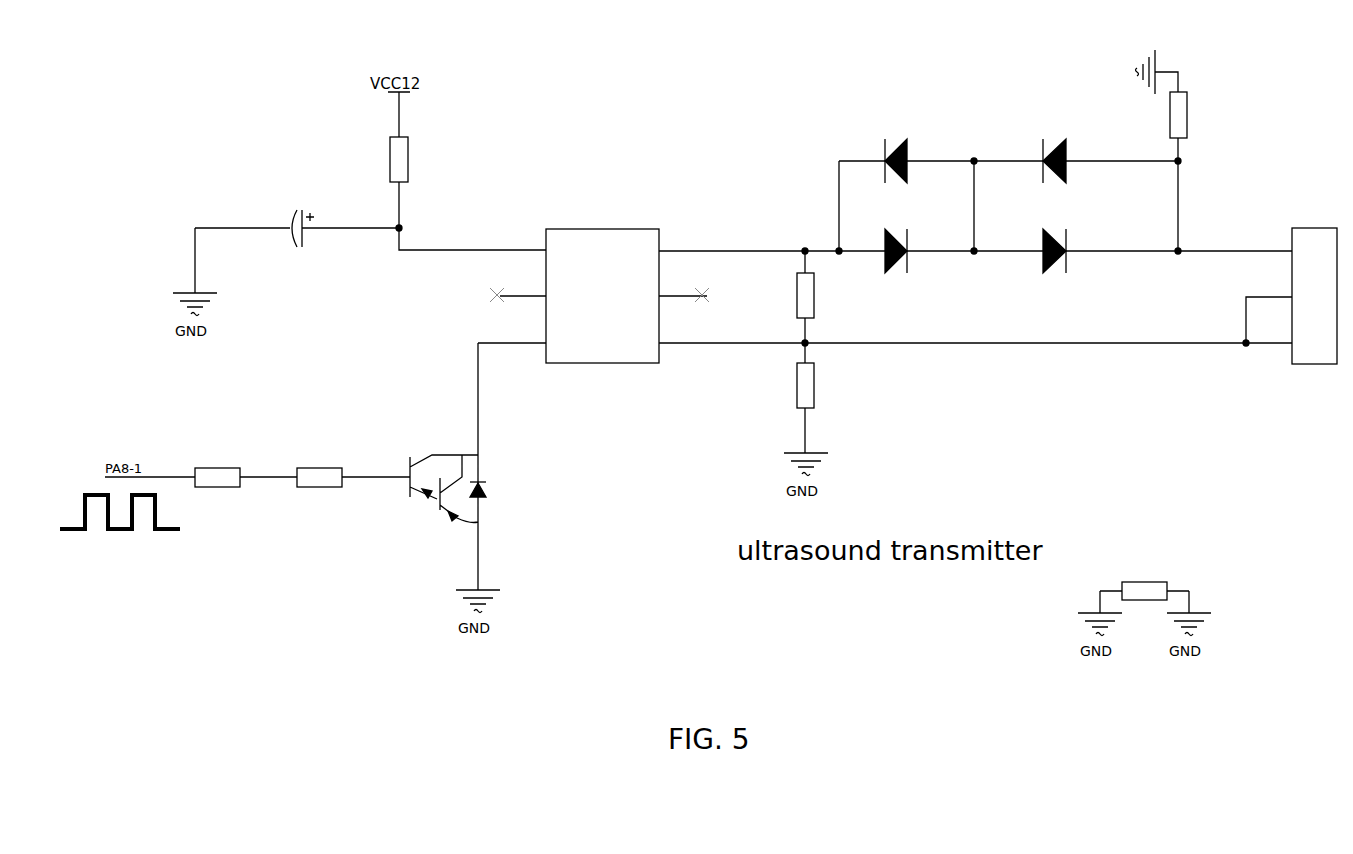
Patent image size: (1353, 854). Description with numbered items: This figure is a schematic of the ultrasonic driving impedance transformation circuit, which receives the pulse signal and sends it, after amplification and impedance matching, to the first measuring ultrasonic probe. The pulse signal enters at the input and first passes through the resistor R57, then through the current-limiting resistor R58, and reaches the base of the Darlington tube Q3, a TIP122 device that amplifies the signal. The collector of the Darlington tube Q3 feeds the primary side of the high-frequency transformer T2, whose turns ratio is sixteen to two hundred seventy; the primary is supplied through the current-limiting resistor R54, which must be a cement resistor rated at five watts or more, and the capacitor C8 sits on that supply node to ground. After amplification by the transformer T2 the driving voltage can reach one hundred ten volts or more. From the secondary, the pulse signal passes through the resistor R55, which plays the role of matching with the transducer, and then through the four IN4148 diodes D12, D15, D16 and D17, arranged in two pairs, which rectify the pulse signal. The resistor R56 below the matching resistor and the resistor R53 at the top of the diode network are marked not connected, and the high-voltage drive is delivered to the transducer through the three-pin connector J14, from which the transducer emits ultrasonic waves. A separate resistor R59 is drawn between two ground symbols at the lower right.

The current-limiting resistor R54 is at (468, 193).
The capacitor C8 is at (286, 265).
The high-frequency transformer T2 is at (885, 296).
The resistor R55 is at (821, 297).
The resistor R56 is at (815, 421).
The IN4148 diode D12 is at (906, 163).
The IN4148 diode D15 is at (1066, 163).
The IN4148 diode D16 is at (906, 252).
The IN4148 diode D17 is at (1066, 252).
The resistor R53 is at (1151, 94).
The connector J14 is at (1290, 297).
The resistor R57 is at (246, 480).
The current-limiting resistor R58 is at (353, 480).
The Darlington tube Q3 is at (482, 489).
The resistor R59 is at (1144, 611).